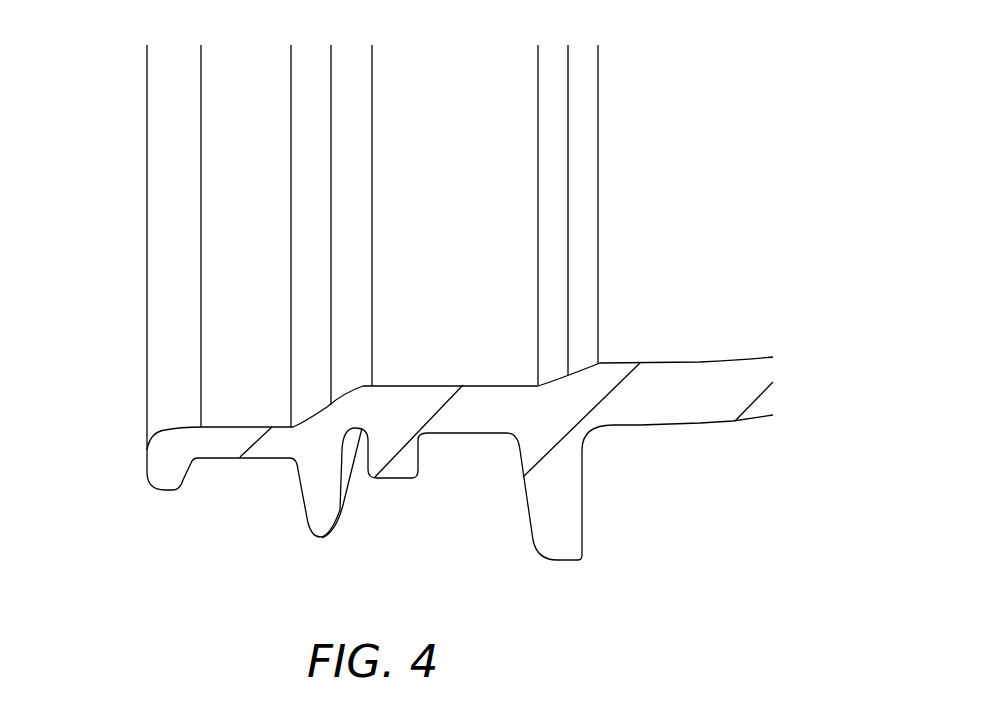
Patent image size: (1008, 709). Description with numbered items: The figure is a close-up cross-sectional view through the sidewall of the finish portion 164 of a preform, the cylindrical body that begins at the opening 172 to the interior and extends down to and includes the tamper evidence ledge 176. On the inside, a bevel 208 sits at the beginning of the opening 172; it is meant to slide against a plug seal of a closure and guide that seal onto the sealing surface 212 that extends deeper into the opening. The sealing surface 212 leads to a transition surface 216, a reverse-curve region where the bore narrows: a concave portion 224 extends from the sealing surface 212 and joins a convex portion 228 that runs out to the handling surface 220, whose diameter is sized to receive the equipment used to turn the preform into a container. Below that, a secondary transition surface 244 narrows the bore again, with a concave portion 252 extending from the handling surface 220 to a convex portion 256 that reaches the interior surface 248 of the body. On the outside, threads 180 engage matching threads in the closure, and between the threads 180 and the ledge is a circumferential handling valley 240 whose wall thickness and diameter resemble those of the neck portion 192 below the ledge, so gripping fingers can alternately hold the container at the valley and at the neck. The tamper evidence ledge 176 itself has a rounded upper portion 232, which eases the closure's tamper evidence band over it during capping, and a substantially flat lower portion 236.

The finish portion 164 is at (188, 572).
The opening 172 is at (132, 264).
The tamper evidence ledge 176 is at (580, 562).
The threads 180 is at (320, 540).
The neck portion 192 is at (635, 427).
The bevel 208 is at (167, 187).
The sealing surface 212 is at (263, 275).
The transition surface 216 is at (279, 350).
The handling surface 220 is at (471, 221).
The concave portion 224 is at (310, 134).
The convex portion 228 is at (352, 135).
The rounded upper portion 232 is at (528, 535).
The flat lower portion 236 is at (582, 525).
The handling valley 240 is at (468, 433).
The secondary transition surface 244 is at (614, 248).
The interior surface 248 is at (711, 177).
The concave portion 252 is at (553, 133).
The convex portion 256 is at (583, 130).